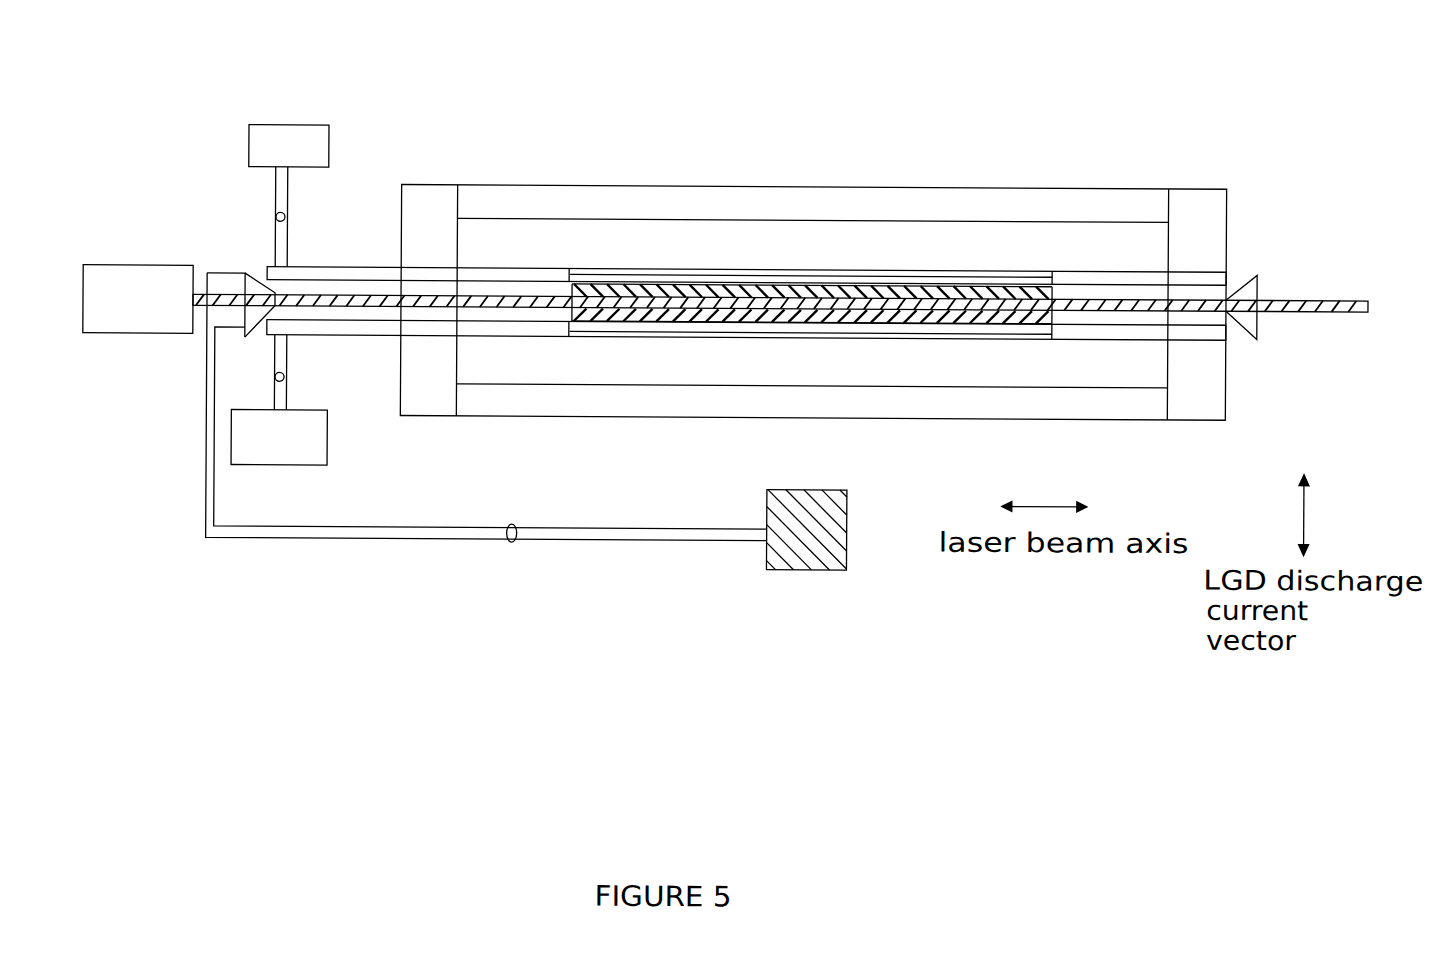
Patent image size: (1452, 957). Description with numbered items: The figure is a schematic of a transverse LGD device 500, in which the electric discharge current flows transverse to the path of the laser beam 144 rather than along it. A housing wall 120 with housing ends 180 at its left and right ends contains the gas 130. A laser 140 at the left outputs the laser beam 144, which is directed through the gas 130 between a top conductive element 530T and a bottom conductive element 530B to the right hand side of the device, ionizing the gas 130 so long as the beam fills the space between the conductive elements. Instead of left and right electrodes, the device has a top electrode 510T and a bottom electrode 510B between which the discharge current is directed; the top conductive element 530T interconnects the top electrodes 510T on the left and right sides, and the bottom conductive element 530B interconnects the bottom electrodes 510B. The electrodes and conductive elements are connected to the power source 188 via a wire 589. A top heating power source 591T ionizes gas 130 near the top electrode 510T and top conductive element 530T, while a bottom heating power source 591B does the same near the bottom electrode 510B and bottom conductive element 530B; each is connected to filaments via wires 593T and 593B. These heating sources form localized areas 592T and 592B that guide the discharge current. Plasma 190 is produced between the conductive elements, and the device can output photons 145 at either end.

The transverse LGD device 500 is at (951, 114).
The housing wall 120 is at (515, 203).
The gas 130 is at (685, 240).
The housing ends 180 is at (452, 243).
The plasma 190 is at (775, 293).
The laser 140 is at (138, 267).
The laser beam 144 is at (233, 294).
The output photons 145 is at (252, 274).
The top electrode 510T is at (369, 268).
The bottom electrode 510B is at (430, 337).
The top conductive element 530T is at (600, 273).
The bottom conductive element 530B is at (613, 331).
The top localized area 592T is at (862, 292).
The bottom localized area 592B is at (822, 316).
The top heating power source 591T is at (288, 126).
The bottom heating power source 591B is at (258, 467).
The top wire 593T is at (315, 223).
The bottom wire 593B is at (284, 379).
The wire 589 is at (515, 545).
The power source 188 is at (807, 568).